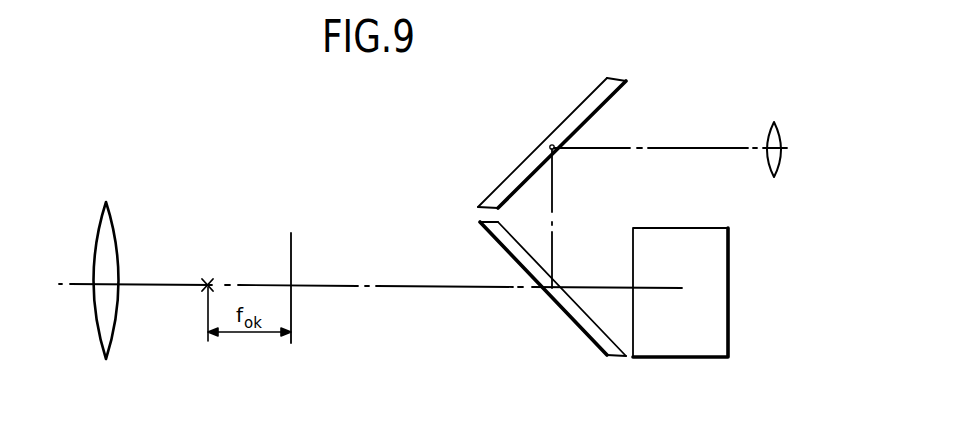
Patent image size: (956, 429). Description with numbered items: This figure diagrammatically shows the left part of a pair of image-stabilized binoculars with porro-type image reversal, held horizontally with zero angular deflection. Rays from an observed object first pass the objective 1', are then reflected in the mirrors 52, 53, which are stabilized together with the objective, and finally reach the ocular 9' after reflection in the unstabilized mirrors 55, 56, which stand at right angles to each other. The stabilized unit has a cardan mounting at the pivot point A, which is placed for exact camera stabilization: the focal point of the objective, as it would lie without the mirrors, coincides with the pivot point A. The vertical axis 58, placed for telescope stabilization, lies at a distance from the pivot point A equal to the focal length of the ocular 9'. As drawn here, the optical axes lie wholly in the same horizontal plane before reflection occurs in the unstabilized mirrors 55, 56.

The objective 1' is at (86, 263).
The pivot point A is at (212, 277).
The vertical axis 58 is at (292, 249).
The unstabilized mirror 56 is at (570, 115).
The unstabilized mirror 55 is at (571, 318).
The stabilized mirror 52 is at (692, 319).
The stabilized mirror 53 is at (729, 337).
The ocular 9' is at (754, 127).